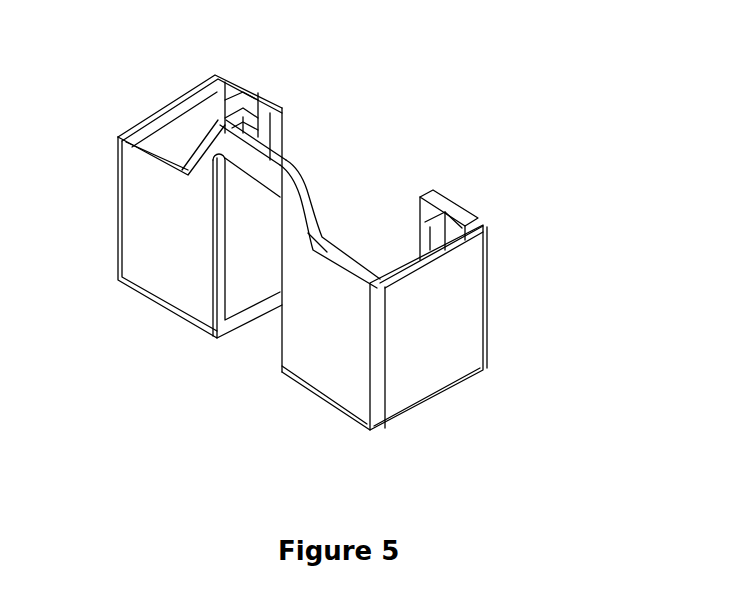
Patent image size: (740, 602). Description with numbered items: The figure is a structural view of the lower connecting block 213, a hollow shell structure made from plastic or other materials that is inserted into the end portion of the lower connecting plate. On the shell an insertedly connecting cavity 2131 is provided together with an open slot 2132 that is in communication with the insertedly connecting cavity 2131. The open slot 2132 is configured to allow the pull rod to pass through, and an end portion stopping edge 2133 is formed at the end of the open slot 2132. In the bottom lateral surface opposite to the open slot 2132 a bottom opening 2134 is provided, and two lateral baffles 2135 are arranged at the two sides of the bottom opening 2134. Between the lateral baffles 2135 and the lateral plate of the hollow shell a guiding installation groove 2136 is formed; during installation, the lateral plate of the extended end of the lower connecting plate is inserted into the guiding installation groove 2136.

The lower connecting block 213 is at (167, 280).
The insertedly connecting cavity 2131 is at (378, 268).
The open slot 2132 is at (268, 340).
The end portion stopping edge 2133 is at (243, 150).
The bottom opening 2134 is at (342, 182).
The lateral baffles 2135 is at (236, 122).
The guiding installation groove 2136 is at (237, 95).